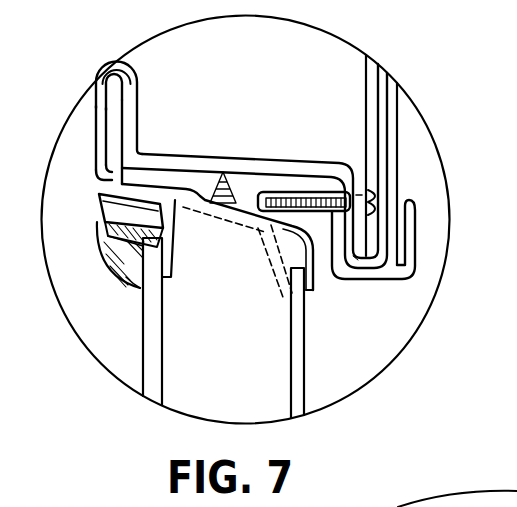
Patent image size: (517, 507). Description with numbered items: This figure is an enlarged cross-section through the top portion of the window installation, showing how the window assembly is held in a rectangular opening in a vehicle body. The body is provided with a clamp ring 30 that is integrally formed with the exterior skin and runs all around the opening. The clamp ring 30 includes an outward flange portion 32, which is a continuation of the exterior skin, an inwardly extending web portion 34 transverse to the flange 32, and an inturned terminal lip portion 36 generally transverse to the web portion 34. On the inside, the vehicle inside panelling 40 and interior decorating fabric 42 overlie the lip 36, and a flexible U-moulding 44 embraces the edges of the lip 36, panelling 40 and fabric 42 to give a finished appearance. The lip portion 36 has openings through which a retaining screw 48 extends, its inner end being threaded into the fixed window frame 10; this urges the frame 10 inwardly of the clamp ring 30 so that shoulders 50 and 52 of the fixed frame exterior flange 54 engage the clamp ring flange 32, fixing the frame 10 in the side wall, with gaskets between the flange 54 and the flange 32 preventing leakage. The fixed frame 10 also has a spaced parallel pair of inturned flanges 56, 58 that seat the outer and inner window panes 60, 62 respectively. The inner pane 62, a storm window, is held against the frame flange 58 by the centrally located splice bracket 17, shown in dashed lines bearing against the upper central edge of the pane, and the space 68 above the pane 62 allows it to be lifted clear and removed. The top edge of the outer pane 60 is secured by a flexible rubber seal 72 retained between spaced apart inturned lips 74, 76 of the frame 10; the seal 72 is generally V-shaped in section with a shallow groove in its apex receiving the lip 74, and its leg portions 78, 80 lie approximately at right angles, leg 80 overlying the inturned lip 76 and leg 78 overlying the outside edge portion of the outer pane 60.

The fixed window frame 10 is at (181, 207).
The splice bracket 17 is at (252, 283).
The clamp ring 30 is at (242, 154).
The outward flange portion 32 is at (141, 58).
The inwardly extending web portion 34 is at (163, 155).
The inturned terminal lip portion 36 is at (360, 249).
The vehicle inside panelling 40 is at (378, 228).
The interior decorating fabric 42 is at (392, 243).
The flexible U-moulding 44 is at (406, 259).
The retaining screw 48 is at (318, 192).
The shoulder 50 is at (109, 93).
The shoulder 52 is at (104, 174).
The fixed frame exterior flange 54 is at (95, 117).
The inturned flange 56 is at (172, 282).
The inturned flange 58 is at (314, 290).
The outer window pane 60 is at (147, 373).
The inner window pane 62 is at (300, 378).
The space 68 is at (287, 252).
The flexible rubber seal 72 is at (119, 269).
The inturned lip 74 is at (104, 222).
The inturned lip 76 is at (112, 248).
The leg portion 78 is at (130, 282).
The leg portion 80 is at (99, 204).